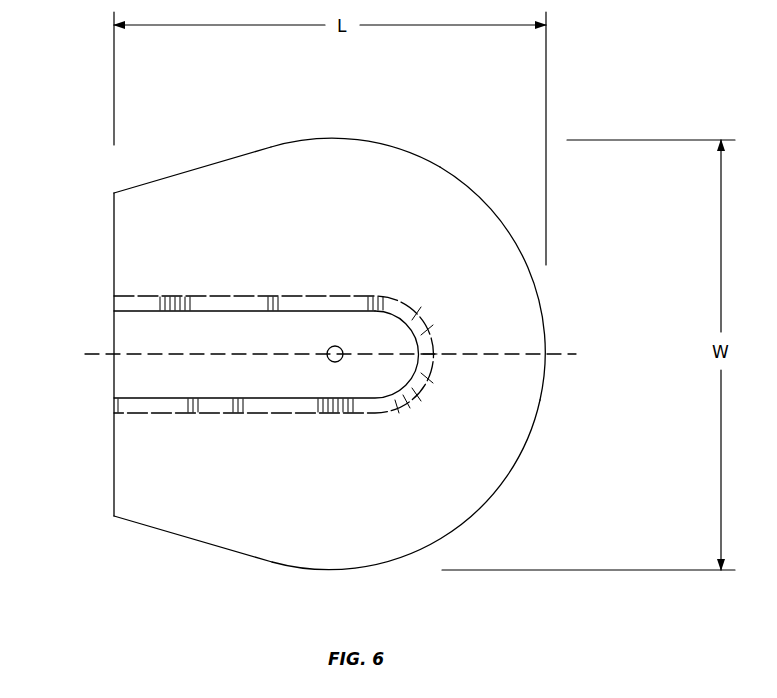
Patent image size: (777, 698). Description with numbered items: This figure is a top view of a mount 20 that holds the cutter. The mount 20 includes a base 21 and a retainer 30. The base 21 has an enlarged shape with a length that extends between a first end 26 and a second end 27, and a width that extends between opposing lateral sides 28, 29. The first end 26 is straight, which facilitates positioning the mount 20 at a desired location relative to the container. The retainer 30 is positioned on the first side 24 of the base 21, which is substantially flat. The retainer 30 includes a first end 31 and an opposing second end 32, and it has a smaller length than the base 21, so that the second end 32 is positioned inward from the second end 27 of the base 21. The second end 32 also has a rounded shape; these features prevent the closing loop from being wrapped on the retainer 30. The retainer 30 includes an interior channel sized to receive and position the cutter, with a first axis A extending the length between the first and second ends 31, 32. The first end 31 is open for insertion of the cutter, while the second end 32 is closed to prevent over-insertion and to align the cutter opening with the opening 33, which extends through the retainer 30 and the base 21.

The mount 20 is at (353, 333).
The base 21 is at (240, 180).
The first side 24 is at (515, 405).
The first end 26 is at (114, 472).
The second end 27 is at (545, 332).
The lateral side 28 is at (397, 562).
The lateral side 29 is at (337, 138).
The retainer 30 is at (160, 339).
The first end 31 is at (211, 364).
The second end 32 is at (419, 330).
The opening 33 is at (343, 348).
The first axis A is at (467, 354).